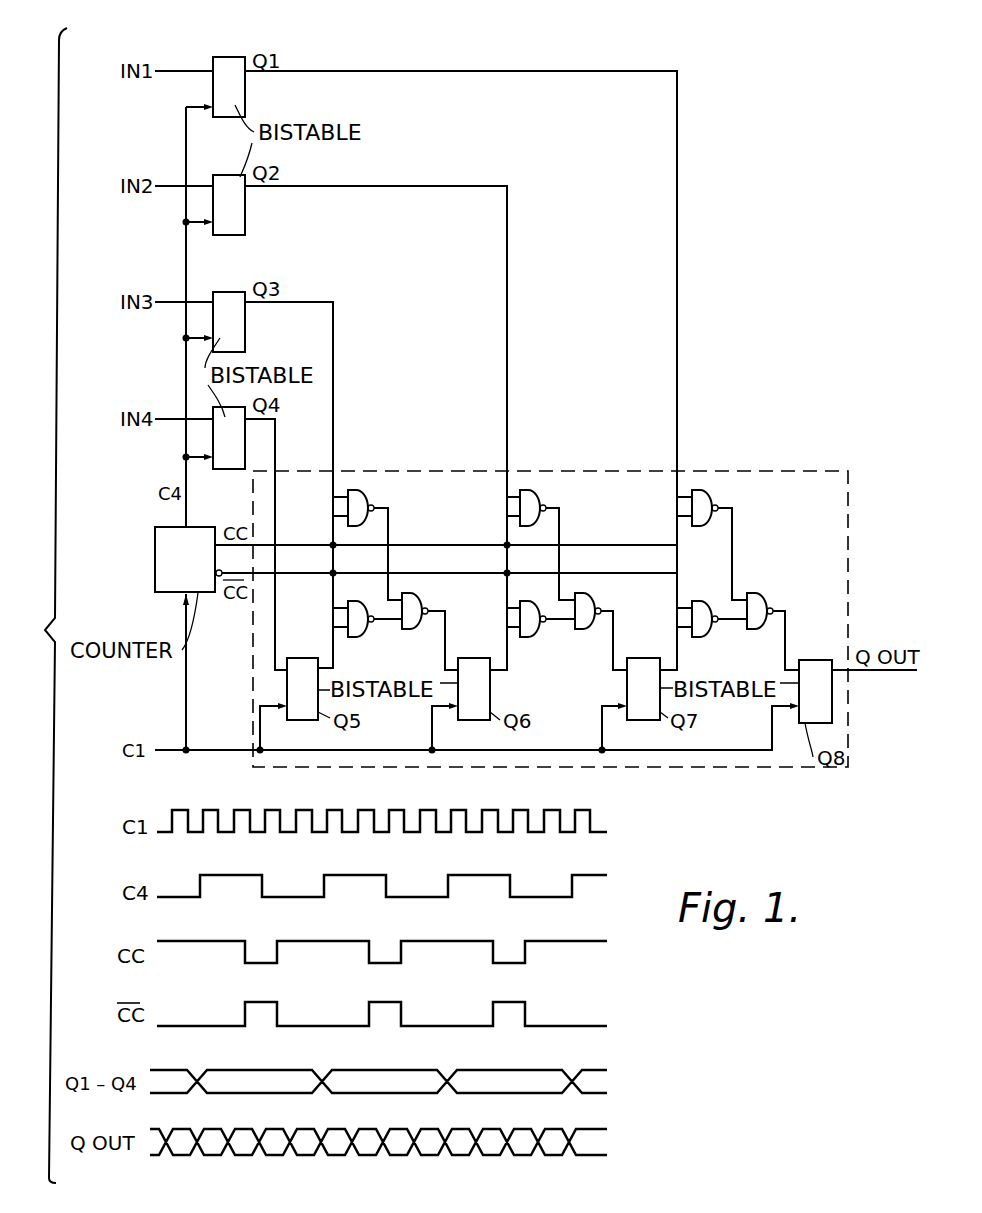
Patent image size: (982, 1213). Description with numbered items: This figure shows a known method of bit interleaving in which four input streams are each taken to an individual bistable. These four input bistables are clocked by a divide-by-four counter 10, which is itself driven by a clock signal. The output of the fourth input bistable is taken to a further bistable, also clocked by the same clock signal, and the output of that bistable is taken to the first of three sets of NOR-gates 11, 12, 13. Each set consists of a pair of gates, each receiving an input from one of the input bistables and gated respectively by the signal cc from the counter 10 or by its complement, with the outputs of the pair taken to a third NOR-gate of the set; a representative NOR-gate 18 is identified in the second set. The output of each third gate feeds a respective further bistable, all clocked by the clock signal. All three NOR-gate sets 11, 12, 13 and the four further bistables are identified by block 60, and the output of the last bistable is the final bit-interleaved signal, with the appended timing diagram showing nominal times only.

The divide-by-4 counter 10 is at (157, 543).
The first set of NOR-gates 11 is at (416, 517).
The second set of NOR-gates 12 is at (590, 517).
The third set of NOR-gates 13 is at (753, 527).
The NOR-gate 18 is at (589, 596).
The block 60 is at (825, 565).